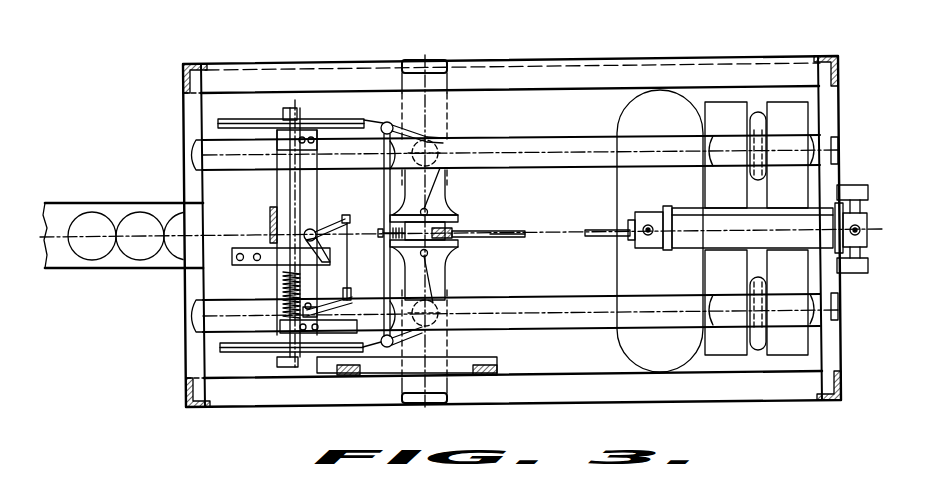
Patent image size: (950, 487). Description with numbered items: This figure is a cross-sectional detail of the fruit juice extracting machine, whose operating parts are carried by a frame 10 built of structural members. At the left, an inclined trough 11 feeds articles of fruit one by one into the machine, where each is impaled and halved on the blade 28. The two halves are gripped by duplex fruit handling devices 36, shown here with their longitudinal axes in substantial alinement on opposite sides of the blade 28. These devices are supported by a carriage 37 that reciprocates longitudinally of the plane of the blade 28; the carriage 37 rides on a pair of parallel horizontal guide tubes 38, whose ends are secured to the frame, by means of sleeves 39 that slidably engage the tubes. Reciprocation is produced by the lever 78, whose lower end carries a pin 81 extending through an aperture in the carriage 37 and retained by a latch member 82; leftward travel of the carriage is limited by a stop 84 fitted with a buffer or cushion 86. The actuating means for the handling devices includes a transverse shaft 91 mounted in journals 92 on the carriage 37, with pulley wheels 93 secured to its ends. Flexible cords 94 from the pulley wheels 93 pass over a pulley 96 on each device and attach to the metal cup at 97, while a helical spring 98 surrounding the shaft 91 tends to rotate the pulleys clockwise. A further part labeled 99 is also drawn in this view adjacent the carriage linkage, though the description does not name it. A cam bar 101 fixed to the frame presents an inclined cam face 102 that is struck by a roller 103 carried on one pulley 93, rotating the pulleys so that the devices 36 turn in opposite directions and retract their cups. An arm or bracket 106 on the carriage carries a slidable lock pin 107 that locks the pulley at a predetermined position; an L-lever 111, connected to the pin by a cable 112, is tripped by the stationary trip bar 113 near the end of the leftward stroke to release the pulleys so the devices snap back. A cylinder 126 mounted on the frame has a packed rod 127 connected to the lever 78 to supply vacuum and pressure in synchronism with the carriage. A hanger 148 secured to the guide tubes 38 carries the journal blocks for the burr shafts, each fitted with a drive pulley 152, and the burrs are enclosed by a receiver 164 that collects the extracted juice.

The frame 10 is at (597, 57).
The inclined trough 11 is at (112, 203).
The blade 28 is at (513, 232).
The fruit handling devices 36 is at (450, 206).
The carriage 37 is at (387, 201).
The guide tubes 38 is at (545, 143).
The sleeves 39 is at (357, 138).
The lever 78 is at (456, 234).
The pin 81 is at (350, 220).
The latch member 82 is at (372, 250).
The stop 84 is at (215, 212).
The buffer or cushion 86 is at (270, 216).
The shaft 91 is at (297, 112).
The journals 92 is at (318, 145).
The pulley wheels 93 is at (230, 120).
The flexible cords or cables 94 is at (417, 138).
The pulley 96 is at (438, 146).
The cord terminal attachment 97 is at (440, 250).
The helical spring 98 is at (289, 283).
The link rod pivot 99 is at (383, 128).
The cam bar 101 is at (465, 362).
The inclined cam face 102 is at (349, 365).
The roller 103 is at (277, 362).
The arm or bracket 106 is at (327, 333).
The lock pin 107 is at (350, 306).
The L-lever 111 is at (325, 230).
The cable or cord 112 is at (348, 271).
The trip bar 113 is at (250, 264).
The cylinder 126 is at (722, 217).
The packed rod 127 is at (598, 236).
The hanger 148 is at (705, 181).
The drive pulley 152 is at (758, 120).
The receiver 164 is at (619, 187).